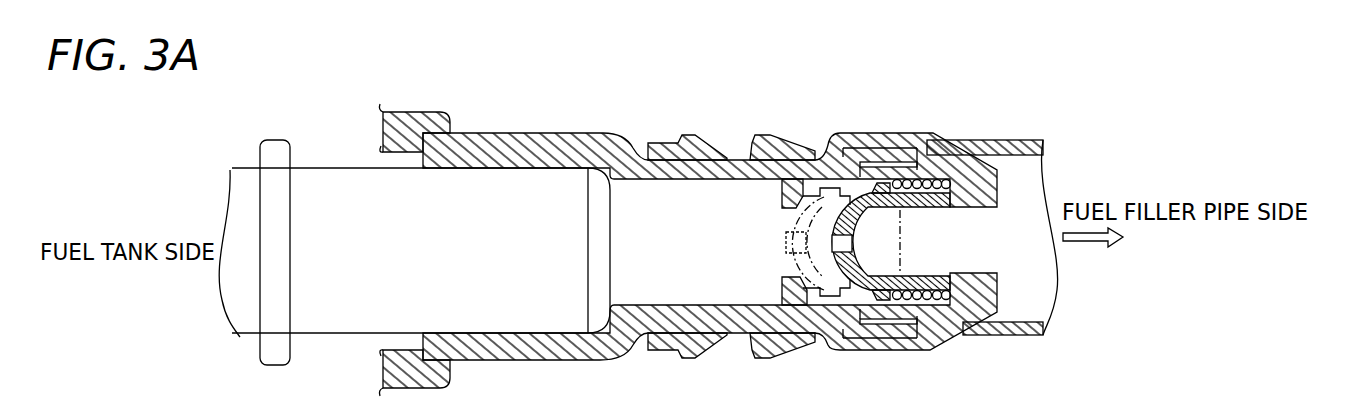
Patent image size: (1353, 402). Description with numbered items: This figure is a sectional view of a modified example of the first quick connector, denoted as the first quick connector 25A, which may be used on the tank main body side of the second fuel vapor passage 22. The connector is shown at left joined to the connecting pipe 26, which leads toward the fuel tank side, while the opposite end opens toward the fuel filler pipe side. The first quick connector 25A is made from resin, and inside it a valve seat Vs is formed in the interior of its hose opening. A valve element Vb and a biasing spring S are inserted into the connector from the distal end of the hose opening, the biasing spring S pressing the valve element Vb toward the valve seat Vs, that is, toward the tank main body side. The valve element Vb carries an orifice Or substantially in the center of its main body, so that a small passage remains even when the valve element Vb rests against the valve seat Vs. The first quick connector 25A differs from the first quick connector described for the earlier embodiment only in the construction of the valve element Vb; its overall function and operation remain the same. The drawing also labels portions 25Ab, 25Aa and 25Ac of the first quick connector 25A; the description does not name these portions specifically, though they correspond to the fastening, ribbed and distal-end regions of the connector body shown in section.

The connecting pipe 26 is at (347, 168).
The first quick connector 25A is at (623, 134).
The flange portion of connector 25Ab is at (502, 148).
The annular ribs of connector 25Aa is at (721, 145).
The retainer portion of connector 25Ac is at (952, 152).
The second fuel vapor passage 22 is at (1013, 143).
The valve seat Vs is at (790, 222).
The orifice Or is at (838, 243).
The valve element Vb is at (848, 272).
The biasing spring S is at (937, 303).